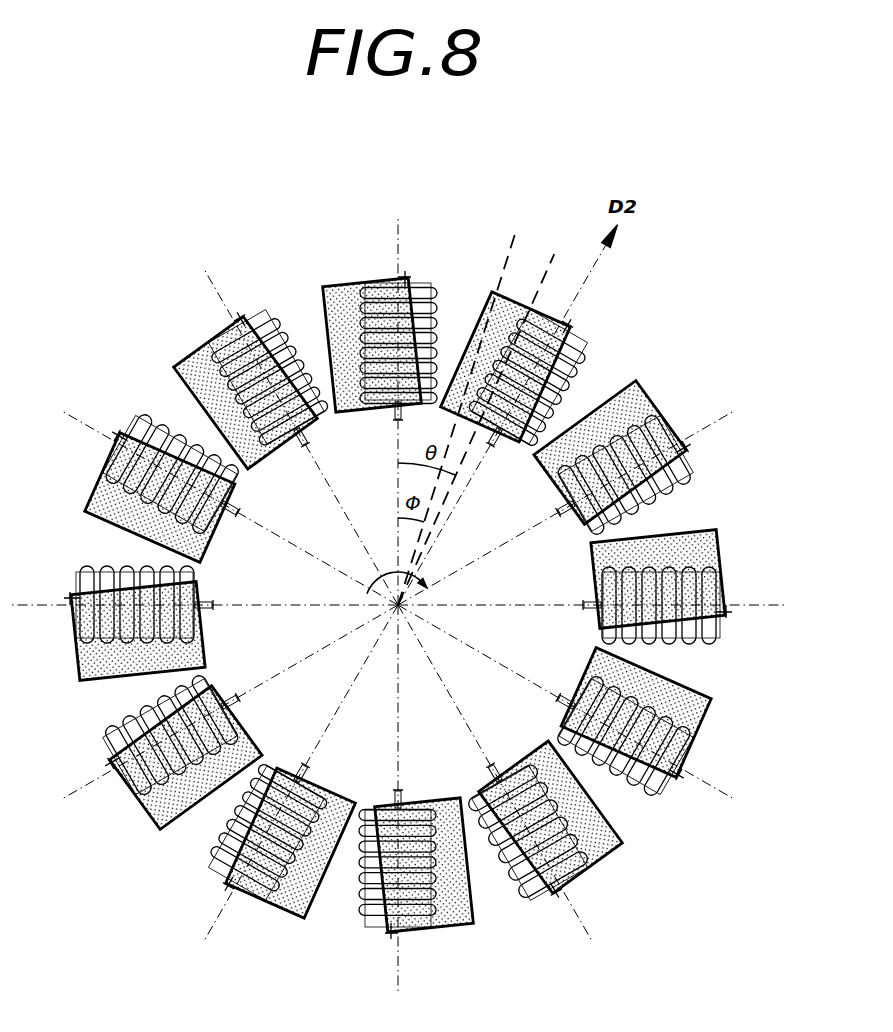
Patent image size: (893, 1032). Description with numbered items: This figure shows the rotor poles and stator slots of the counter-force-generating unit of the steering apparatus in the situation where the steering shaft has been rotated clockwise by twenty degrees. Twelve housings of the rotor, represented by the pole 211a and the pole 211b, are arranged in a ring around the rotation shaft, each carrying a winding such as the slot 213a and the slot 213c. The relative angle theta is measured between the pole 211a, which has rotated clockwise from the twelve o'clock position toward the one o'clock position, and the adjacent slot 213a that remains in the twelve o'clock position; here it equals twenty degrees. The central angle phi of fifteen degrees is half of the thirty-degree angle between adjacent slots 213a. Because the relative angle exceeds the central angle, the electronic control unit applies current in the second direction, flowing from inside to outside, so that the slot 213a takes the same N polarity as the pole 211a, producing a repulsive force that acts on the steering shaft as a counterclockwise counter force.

The pole 211a is at (513, 298).
The second core 211b is at (340, 297).
The slot 213a is at (388, 285).
The third coil 213c is at (573, 343).